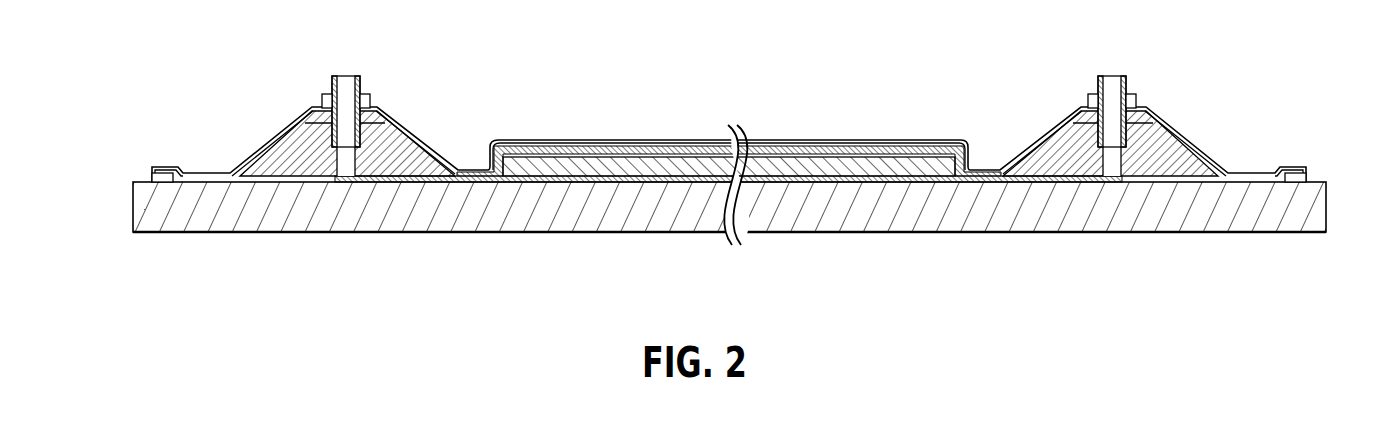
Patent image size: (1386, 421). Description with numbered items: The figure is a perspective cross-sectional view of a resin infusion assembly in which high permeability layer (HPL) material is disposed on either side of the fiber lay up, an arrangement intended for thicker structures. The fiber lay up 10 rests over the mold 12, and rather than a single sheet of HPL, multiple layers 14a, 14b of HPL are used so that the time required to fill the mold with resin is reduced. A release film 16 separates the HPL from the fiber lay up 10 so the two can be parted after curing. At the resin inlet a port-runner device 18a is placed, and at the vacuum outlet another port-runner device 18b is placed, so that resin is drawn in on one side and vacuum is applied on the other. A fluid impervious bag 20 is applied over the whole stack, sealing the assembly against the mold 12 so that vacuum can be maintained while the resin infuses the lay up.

The fiber lay up 10 is at (865, 175).
The mold 12 is at (533, 217).
The layer of HPL 14a is at (763, 182).
The layer of HPL 14b is at (900, 147).
The release film 16 is at (768, 156).
The port-runner device 18a is at (1178, 148).
The port-runner device 18b is at (407, 148).
The fluid impervious bag 20 is at (1258, 177).